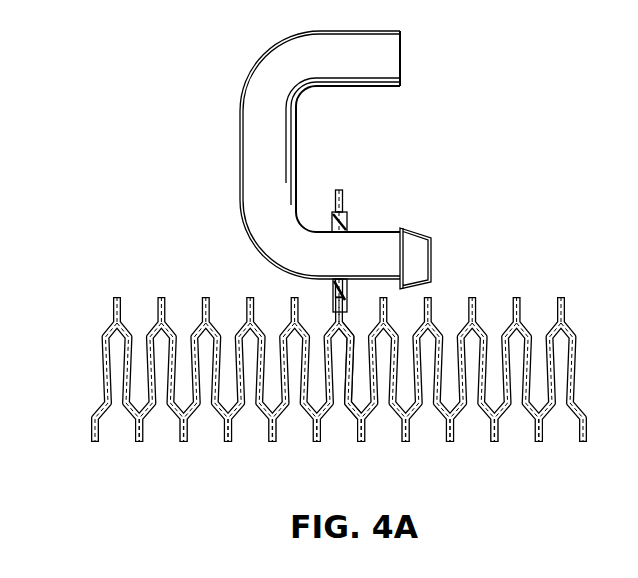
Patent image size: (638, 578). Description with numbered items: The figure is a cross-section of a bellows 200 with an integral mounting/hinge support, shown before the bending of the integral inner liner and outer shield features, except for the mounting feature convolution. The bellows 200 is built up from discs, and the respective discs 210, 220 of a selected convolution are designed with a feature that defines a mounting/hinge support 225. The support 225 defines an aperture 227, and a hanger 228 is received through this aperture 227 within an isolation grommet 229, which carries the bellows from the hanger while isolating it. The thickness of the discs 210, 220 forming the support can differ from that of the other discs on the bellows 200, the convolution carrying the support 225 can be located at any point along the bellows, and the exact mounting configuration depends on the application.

The bellows 200 is at (491, 123).
The hanger 228 is at (247, 150).
The isolation grommet 229 is at (348, 221).
The aperture 227 is at (339, 235).
The mounting/hinge support 225 is at (337, 325).
The disc 210 is at (324, 374).
The disc 220 is at (355, 374).